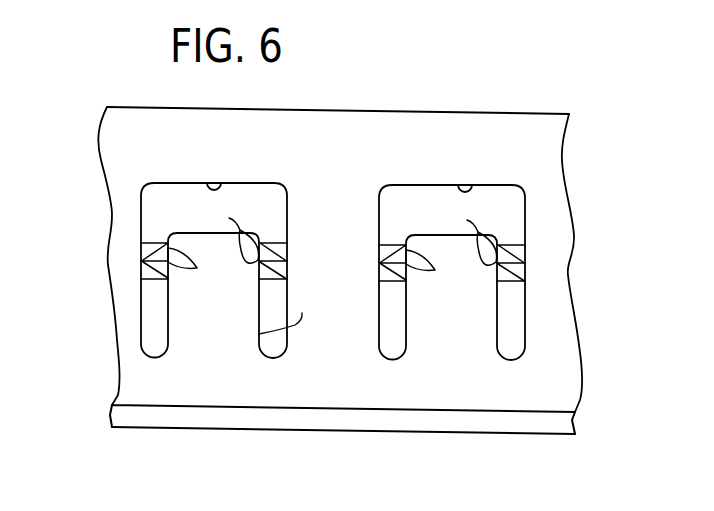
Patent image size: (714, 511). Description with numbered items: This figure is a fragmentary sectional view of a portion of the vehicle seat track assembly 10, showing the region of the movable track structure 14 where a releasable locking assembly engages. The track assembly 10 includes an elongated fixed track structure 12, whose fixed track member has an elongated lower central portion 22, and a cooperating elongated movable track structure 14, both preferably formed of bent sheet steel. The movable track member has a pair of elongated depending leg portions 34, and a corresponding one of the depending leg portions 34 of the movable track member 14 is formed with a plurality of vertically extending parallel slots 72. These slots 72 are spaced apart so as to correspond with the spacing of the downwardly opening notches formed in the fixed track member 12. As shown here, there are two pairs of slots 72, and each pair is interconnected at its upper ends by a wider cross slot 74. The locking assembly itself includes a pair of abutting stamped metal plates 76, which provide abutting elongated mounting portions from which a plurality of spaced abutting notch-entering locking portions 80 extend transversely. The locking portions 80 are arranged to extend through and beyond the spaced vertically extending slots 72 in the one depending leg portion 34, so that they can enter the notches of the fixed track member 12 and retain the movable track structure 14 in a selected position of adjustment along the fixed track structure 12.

The vehicle seat track assembly 10 is at (340, 269).
The fixed track structure 12 is at (342, 443).
The movable track structure 14 is at (567, 153).
The lower central portion 22 is at (403, 434).
The depending leg portions 34 is at (125, 165).
The slots 72 is at (166, 321).
The cross slot 74 is at (223, 189).
The metal plates 76 is at (141, 268).
The locking portions 80 is at (284, 253).